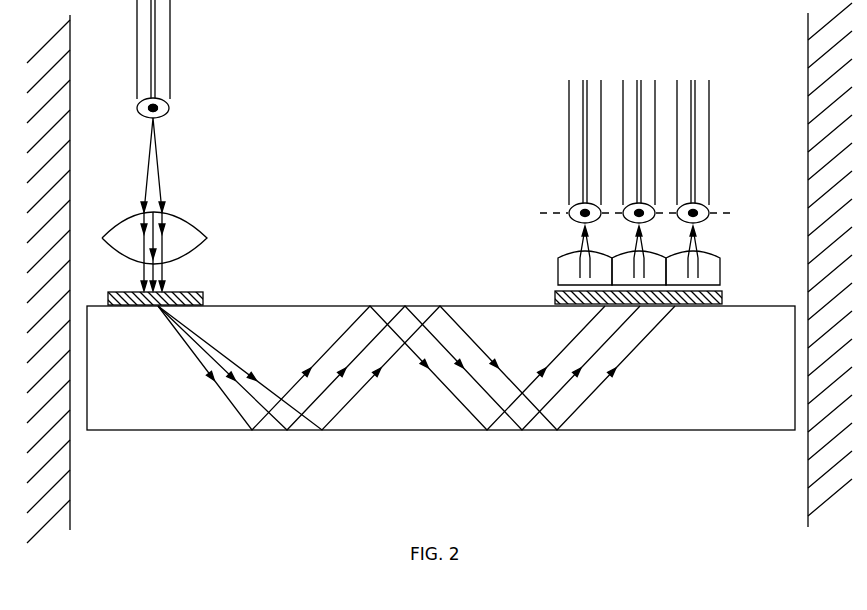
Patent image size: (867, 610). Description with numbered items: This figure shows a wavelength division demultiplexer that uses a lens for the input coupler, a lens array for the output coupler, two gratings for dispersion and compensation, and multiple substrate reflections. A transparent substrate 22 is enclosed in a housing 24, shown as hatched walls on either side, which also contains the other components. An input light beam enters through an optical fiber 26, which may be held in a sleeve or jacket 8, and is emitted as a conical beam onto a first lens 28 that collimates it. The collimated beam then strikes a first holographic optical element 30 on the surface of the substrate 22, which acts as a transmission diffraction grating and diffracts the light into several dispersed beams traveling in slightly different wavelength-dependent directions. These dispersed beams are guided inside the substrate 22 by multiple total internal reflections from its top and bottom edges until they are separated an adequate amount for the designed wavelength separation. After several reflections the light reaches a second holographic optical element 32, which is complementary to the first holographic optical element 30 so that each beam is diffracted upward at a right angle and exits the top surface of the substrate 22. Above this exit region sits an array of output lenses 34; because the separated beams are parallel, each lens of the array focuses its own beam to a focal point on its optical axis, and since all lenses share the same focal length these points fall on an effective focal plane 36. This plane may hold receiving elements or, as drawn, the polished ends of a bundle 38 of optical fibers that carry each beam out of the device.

The sleeve or jacket 8 is at (139, 109).
The transparent substrate 22 is at (773, 415).
The housing 24 is at (439, 273).
The optical fiber 26 is at (170, 59).
The first lens 28 is at (186, 232).
The first holographic optical element 30 is at (205, 292).
The second holographic optical element 32 is at (623, 294).
The array of output lenses 34 is at (622, 255).
The effective focal plane 36 is at (633, 214).
The bundle of optical fibers 38 is at (623, 151).